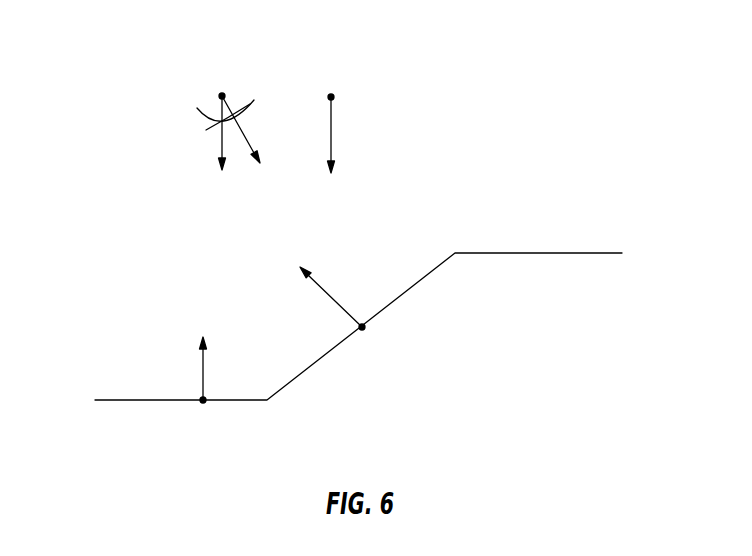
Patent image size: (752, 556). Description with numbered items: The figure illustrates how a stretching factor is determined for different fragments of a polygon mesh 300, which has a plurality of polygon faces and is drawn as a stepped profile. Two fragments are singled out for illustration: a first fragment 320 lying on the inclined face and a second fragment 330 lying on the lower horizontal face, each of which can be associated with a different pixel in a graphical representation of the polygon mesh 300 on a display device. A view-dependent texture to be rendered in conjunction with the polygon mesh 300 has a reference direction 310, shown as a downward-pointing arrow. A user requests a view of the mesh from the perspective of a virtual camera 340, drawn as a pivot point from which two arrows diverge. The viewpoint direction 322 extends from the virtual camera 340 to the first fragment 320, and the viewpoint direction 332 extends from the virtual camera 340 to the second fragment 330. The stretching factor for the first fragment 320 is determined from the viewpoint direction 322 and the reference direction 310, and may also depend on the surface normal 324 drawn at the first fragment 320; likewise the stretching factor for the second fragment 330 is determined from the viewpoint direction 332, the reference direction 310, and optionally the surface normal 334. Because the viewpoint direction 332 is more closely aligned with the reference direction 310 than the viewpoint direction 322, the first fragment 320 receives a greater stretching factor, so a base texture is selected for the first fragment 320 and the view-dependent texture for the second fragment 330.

The polygon mesh 300 is at (595, 252).
The reference direction 310 is at (332, 132).
The first fragment 320 is at (366, 328).
The viewpoint direction 322 is at (247, 137).
The surface normal 324 is at (323, 292).
The second fragment 330 is at (203, 403).
The viewpoint direction 332 is at (220, 145).
The surface normal 334 is at (205, 367).
The virtual camera 340 is at (225, 88).